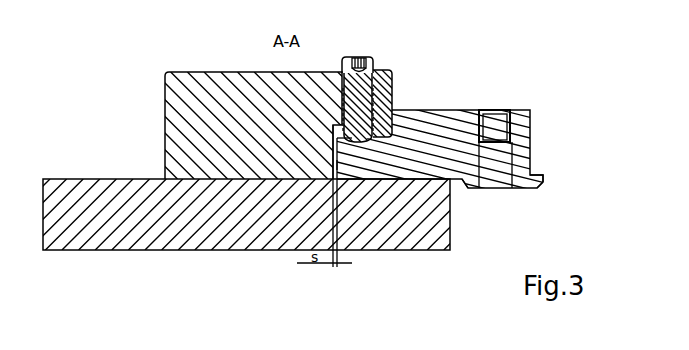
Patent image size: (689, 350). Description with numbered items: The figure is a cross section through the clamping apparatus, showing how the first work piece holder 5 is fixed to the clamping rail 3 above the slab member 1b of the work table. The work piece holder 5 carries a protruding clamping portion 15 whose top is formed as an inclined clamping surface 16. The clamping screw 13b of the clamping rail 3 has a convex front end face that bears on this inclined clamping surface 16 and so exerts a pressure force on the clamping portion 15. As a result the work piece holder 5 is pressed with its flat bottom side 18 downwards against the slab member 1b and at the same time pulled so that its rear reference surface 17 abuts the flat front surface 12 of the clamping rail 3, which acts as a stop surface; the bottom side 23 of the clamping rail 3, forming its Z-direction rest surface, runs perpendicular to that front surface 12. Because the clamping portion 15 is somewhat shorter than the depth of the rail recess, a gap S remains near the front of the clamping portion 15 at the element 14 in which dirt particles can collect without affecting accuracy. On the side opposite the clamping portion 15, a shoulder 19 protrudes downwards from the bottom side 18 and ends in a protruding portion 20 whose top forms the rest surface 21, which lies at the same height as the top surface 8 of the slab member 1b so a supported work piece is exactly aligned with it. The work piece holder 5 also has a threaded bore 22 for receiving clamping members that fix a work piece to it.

The slab member 1b is at (187, 251).
The clamping rail 3 is at (207, 80).
The first work piece holder 5 is at (529, 110).
The top surface of the slab member 8 is at (140, 172).
The front surface of the clamping rail 12 is at (402, 88).
The clamping screw 13b is at (361, 57).
The web 14 is at (355, 152).
The clamping portion 15 is at (343, 163).
The inclined clamping surface 16 is at (333, 123).
The reference surface 17 is at (384, 132).
The bottom side 18 is at (410, 185).
The shoulder 19 is at (473, 189).
The protruding portion 20 is at (539, 185).
The rest surface 21 is at (542, 170).
The threaded bore 22 is at (495, 124).
The bottom side of the clamping rail 23 is at (257, 185).